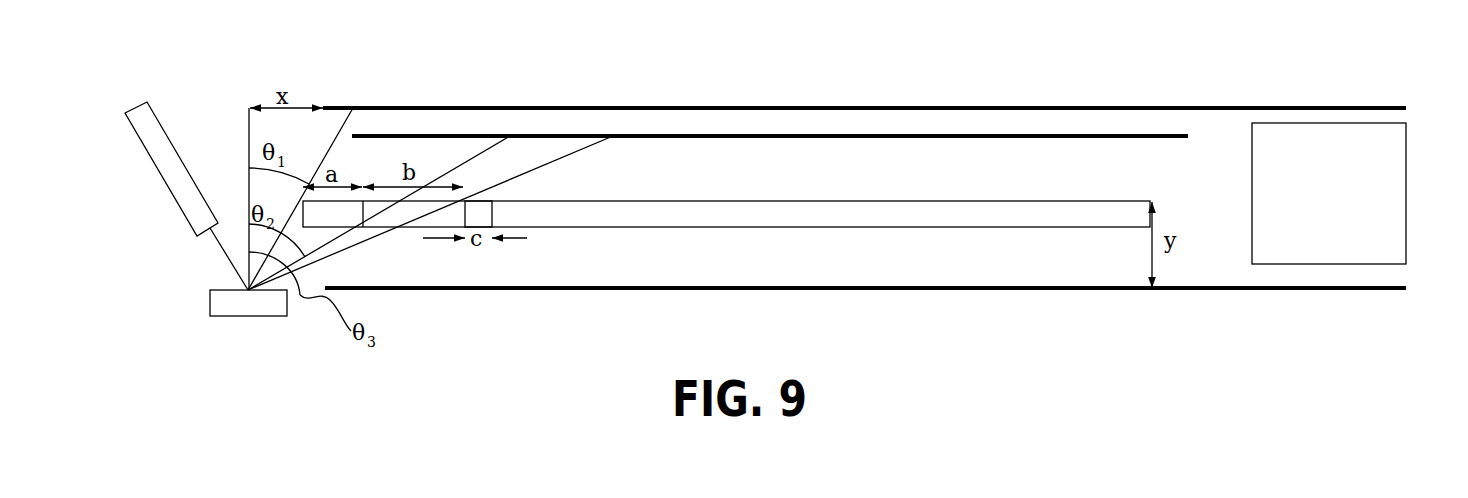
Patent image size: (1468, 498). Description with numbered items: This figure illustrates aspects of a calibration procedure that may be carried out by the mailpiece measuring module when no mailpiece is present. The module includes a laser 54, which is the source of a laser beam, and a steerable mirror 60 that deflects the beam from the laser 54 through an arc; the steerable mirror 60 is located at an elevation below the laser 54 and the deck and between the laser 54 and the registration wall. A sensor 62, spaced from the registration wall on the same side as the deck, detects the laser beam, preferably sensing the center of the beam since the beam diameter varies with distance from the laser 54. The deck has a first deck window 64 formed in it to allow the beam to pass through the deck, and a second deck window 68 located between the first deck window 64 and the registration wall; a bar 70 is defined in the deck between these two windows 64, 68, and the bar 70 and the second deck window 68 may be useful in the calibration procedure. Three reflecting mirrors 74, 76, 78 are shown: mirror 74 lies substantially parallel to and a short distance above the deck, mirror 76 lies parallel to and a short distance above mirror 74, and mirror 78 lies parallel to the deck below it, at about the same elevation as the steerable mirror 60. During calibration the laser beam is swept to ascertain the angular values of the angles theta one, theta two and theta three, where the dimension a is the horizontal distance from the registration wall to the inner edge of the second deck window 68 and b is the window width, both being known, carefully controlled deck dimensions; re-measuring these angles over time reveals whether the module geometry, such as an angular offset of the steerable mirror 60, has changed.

The laser 54 is at (180, 155).
The steerable mirror 60 is at (243, 317).
The sensor 62 is at (1337, 140).
The first deck window 64 is at (865, 227).
The second deck window 68 is at (422, 233).
The bar 70 is at (502, 213).
The mirror 74 is at (1022, 136).
The mirror 76 is at (840, 108).
The mirror 78 is at (1044, 292).